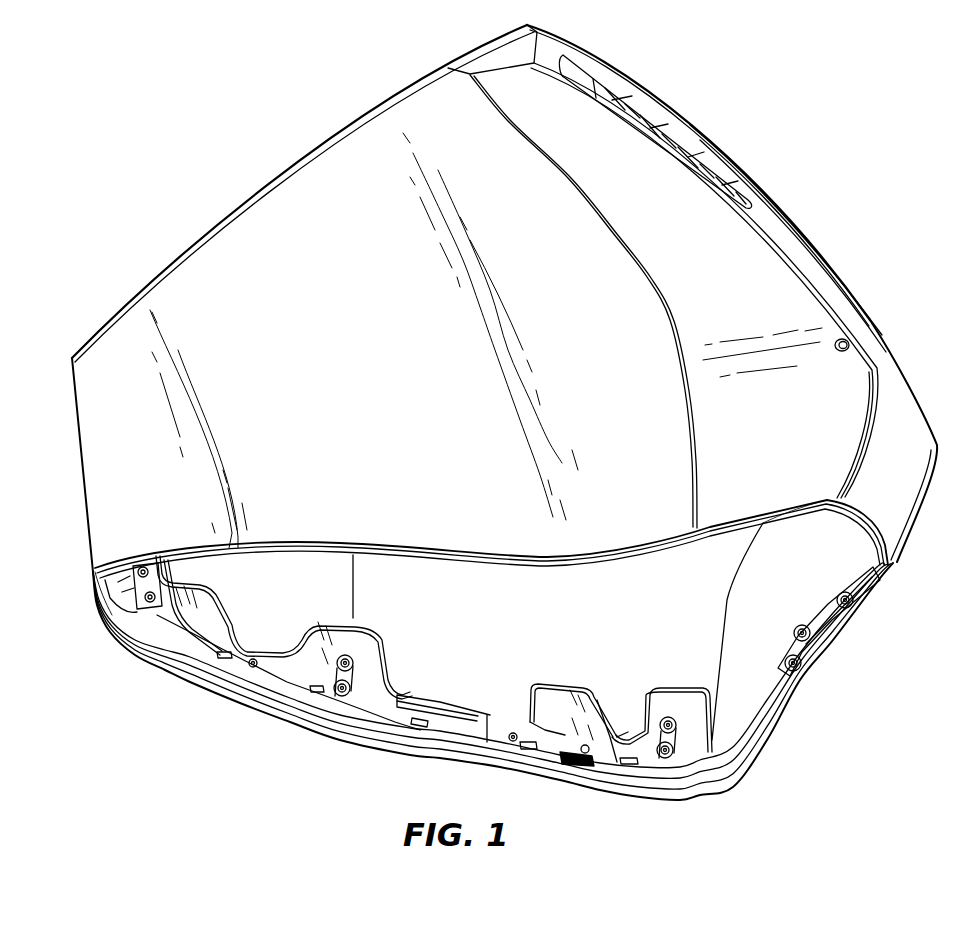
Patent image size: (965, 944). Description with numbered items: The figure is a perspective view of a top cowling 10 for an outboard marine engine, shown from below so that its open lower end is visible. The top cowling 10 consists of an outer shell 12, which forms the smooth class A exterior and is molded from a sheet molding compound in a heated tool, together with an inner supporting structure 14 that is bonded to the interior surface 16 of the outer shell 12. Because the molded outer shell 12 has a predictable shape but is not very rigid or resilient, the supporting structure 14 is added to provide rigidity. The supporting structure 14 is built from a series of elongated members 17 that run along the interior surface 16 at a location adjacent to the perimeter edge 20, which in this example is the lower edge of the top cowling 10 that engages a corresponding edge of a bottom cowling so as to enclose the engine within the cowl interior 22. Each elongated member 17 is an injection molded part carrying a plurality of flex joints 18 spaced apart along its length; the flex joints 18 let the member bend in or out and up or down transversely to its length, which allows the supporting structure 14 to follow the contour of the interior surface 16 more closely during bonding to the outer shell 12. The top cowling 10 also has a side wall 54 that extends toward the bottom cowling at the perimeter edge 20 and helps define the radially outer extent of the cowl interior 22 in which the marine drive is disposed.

The top cowling 10 is at (775, 112).
The outer shell 12 is at (883, 358).
The supporting structure 14 is at (449, 698).
The interior surface 16 is at (587, 620).
The elongated members 17 is at (360, 682).
The flex joints 18 is at (291, 662).
The perimeter edge 20 is at (111, 618).
The cowl interior 22 is at (748, 632).
The side wall 54 is at (805, 565).